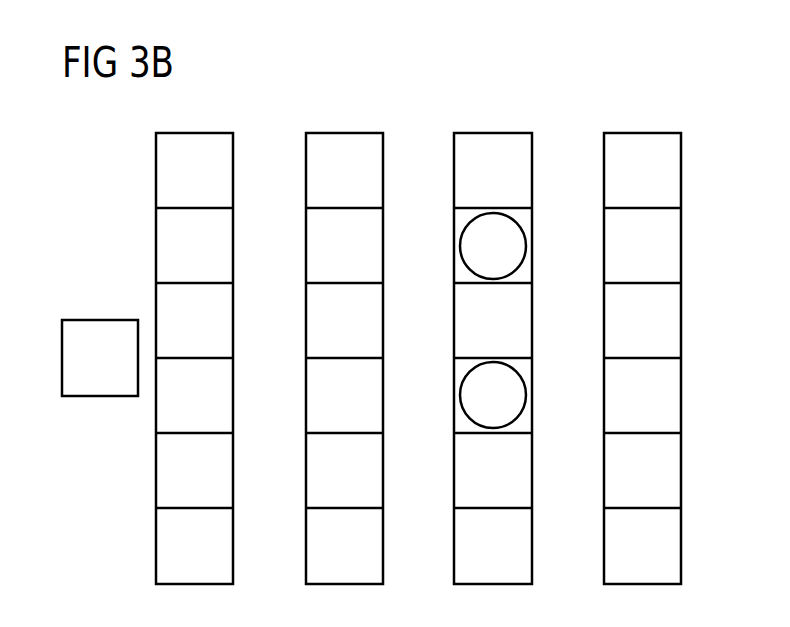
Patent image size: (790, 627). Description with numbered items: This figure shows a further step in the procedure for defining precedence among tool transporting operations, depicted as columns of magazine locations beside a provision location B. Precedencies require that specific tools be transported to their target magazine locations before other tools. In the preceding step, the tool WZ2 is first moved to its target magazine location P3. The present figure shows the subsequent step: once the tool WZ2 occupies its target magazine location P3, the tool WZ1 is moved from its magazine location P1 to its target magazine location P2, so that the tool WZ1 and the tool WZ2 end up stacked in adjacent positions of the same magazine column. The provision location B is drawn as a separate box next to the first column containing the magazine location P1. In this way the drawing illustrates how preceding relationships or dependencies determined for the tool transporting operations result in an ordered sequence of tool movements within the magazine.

The magazine location P1 is at (156, 222).
The target magazine location P2 is at (454, 219).
The target magazine location P3 is at (454, 372).
The tool WZ1 is at (527, 250).
The tool WZ2 is at (527, 401).
The provision location B is at (100, 320).